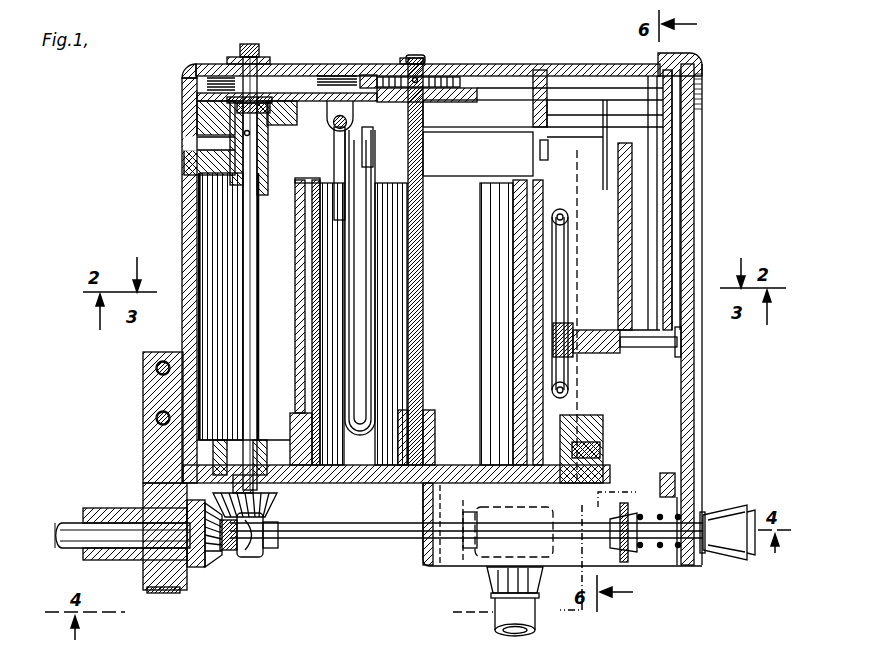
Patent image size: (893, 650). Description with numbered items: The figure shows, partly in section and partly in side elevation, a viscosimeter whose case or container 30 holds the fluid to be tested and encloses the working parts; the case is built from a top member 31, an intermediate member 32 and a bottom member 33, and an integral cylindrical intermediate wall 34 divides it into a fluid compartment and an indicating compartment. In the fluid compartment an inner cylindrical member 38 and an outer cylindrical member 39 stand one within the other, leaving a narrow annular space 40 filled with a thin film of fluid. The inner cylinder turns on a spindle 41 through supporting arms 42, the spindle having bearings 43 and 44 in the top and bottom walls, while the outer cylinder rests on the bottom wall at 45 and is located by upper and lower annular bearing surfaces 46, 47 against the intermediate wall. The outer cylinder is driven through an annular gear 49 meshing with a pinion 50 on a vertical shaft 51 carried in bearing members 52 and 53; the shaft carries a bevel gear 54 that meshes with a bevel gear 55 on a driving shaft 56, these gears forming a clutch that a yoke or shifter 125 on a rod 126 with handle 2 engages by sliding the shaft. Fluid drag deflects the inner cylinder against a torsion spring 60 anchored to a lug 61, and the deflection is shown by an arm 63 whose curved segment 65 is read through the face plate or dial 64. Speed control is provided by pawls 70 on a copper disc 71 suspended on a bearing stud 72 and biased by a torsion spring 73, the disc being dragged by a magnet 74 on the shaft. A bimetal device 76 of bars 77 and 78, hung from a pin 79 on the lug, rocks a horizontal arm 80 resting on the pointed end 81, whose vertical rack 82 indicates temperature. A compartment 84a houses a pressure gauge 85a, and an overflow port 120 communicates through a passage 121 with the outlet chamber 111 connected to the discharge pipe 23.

The handle or button 2 is at (740, 517).
The discharge pipe 23 is at (497, 623).
The case or container 30 is at (497, 57).
The top member 31 is at (320, 70).
The intermediate member 32 is at (193, 238).
The bottom member 33 is at (153, 453).
The intermediate wall 34 is at (543, 159).
The inner cylindrical member 38 is at (513, 237).
The outer cylindrical member 39 is at (517, 275).
The annular space 40 is at (315, 183).
The spindle 41 is at (424, 352).
The supporting arms 42 is at (436, 455).
The upper bearing 43 is at (416, 64).
The lower bearing 44 is at (412, 488).
The bottom wall resting point 45 is at (290, 494).
The upper annular bearing surface 46 is at (558, 207).
The lower annular bearing surface 47 is at (540, 432).
The annular gear 49 is at (285, 433).
The pinion 50 is at (221, 432).
The vertical shaft 51 is at (249, 300).
The upper bearing member 52 is at (262, 160).
The lower bearing member 53 is at (275, 512).
The bevel gear 54 is at (268, 549).
The cooperating bevel gear 55 is at (217, 570).
The driving shaft 56 is at (67, 530).
The torsion spring 60 is at (441, 77).
The lug 61 is at (366, 78).
The arm 63 is at (512, 96).
The face plate or dial 64 is at (672, 218).
The curved plate or segment 65 is at (640, 268).
The pawls 70 is at (368, 101).
The copper disc 71 is at (289, 84).
The bearing stud 72 is at (264, 96).
The torsion spring 73 is at (210, 80).
The magnet 74 is at (224, 110).
The bimetal device 76 is at (355, 428).
The bar 77 is at (340, 292).
The bar 78 is at (376, 316).
The pin 79 is at (339, 116).
The horizontal arm 80 is at (470, 123).
The upper pointed end 81 is at (370, 142).
The vertical rack 82 is at (607, 137).
The compartment 84a is at (560, 208).
The pressure gauge 85a is at (570, 300).
The outlet chamber 111 is at (520, 560).
The overflow port 120 is at (488, 143).
The passage 121 is at (620, 489).
The yoke or shifter 125 is at (250, 558).
The rod 126 is at (390, 543).